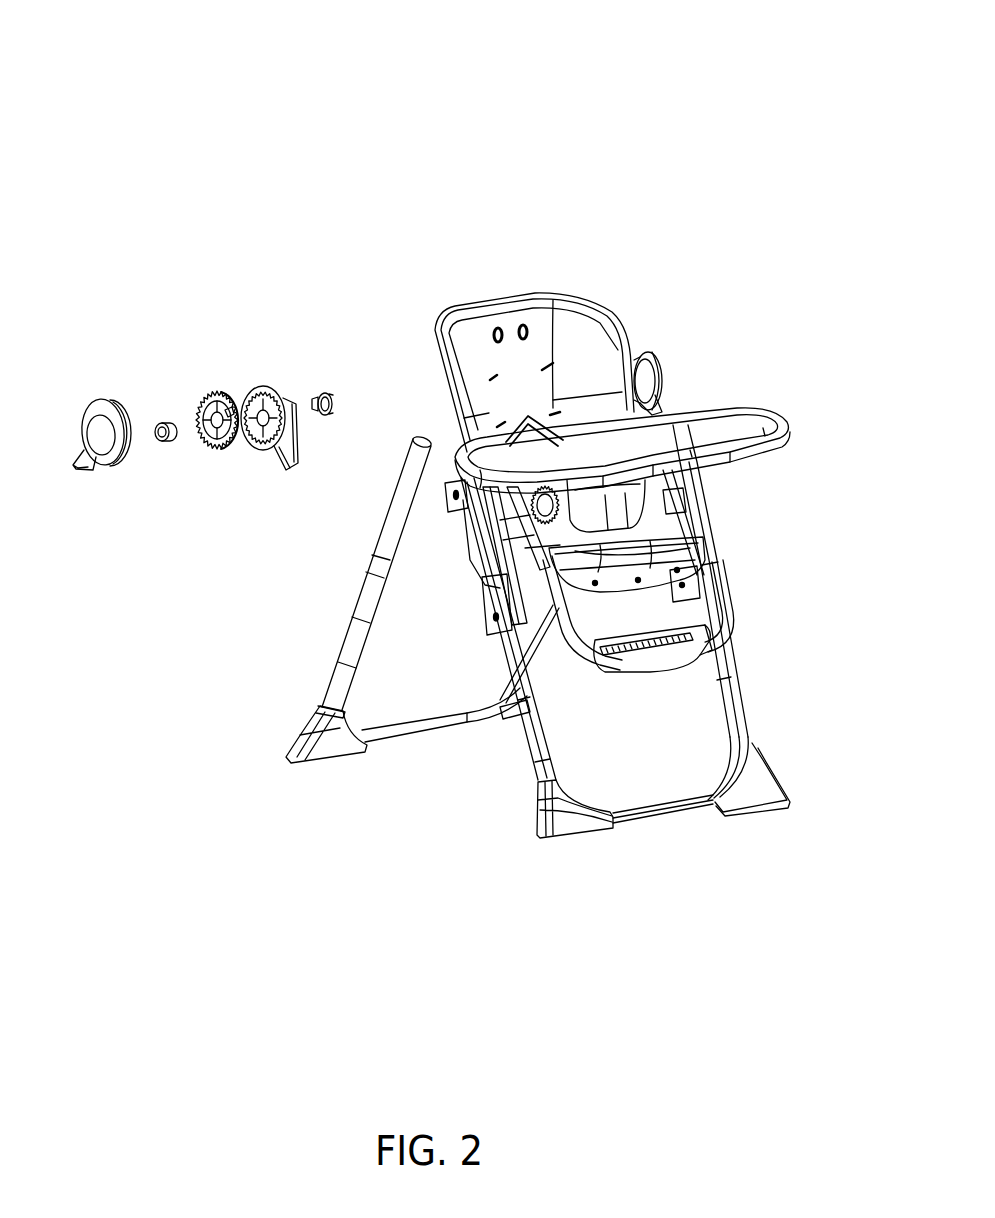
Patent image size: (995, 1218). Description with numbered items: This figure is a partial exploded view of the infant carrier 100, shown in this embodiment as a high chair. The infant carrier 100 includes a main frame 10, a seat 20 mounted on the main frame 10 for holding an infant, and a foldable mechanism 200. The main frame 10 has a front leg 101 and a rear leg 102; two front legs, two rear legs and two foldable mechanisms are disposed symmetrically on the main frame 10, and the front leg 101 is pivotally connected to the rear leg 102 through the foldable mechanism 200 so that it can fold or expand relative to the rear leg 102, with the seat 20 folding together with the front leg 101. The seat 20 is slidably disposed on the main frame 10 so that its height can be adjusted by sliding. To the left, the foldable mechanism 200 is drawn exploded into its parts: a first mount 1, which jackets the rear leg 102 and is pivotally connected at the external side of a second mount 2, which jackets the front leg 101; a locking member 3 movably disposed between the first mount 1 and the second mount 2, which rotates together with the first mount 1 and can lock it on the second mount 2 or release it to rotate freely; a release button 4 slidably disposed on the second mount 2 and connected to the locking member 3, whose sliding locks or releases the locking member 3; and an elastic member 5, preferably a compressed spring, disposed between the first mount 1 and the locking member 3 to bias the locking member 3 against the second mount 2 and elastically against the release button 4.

The infant carrier 100 is at (78, 26).
The main frame 10 is at (553, 914).
The front leg 101 is at (730, 697).
The rear leg 102 is at (540, 632).
The seat 20 is at (592, 283).
The foldable mechanism 200 is at (670, 353).
The first mount 1 is at (100, 405).
The second mount 2 is at (263, 378).
The locking member 3 is at (203, 384).
The release button 4 is at (317, 386).
The elastic member 5 is at (163, 425).